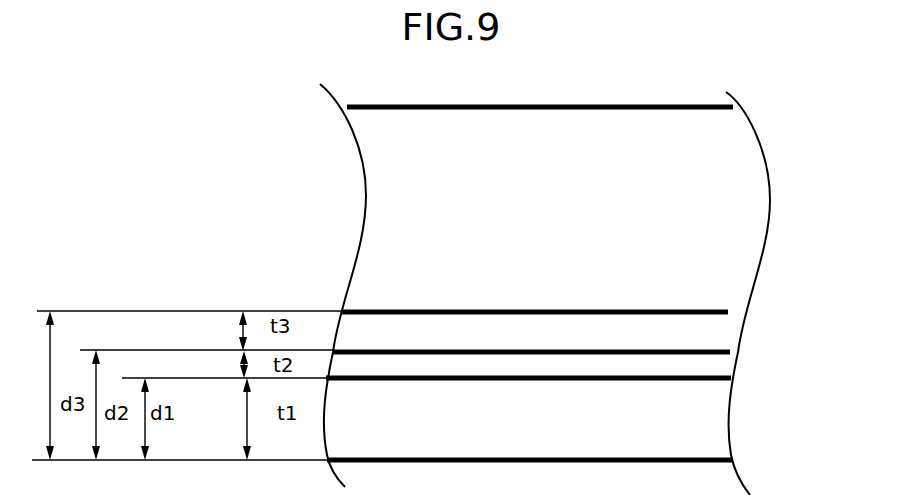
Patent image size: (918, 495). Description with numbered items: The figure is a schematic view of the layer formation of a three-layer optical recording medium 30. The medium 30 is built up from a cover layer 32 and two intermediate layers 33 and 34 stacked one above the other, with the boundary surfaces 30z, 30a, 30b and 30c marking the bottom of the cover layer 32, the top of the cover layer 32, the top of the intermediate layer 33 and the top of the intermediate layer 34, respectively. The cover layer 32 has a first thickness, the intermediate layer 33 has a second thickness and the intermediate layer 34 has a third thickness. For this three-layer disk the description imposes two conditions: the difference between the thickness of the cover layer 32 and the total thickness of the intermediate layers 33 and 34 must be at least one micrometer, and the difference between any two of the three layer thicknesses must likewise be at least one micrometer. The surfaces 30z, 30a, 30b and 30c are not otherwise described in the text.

The optical recording medium 30 is at (662, 85).
The first surface 30a is at (731, 378).
The second surface 30b is at (728, 351).
The third surface 30c is at (726, 310).
The bottom surface 30z is at (727, 461).
The cover layer 32 is at (706, 434).
The intermediate layer 33 is at (718, 364).
The intermediate layer 34 is at (727, 324).